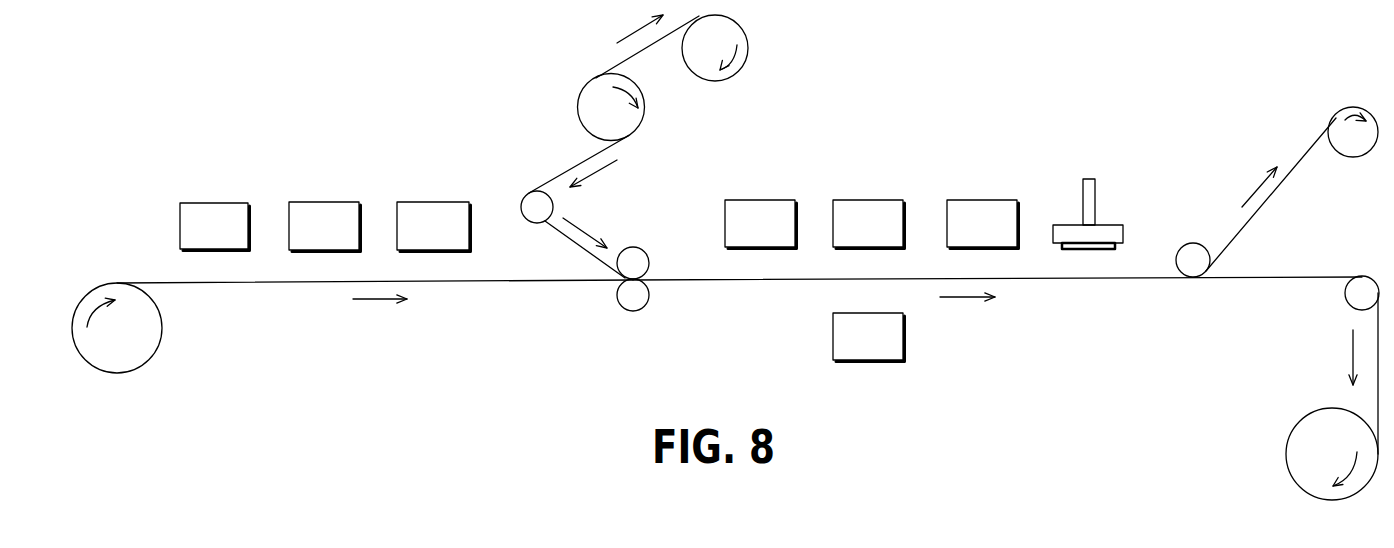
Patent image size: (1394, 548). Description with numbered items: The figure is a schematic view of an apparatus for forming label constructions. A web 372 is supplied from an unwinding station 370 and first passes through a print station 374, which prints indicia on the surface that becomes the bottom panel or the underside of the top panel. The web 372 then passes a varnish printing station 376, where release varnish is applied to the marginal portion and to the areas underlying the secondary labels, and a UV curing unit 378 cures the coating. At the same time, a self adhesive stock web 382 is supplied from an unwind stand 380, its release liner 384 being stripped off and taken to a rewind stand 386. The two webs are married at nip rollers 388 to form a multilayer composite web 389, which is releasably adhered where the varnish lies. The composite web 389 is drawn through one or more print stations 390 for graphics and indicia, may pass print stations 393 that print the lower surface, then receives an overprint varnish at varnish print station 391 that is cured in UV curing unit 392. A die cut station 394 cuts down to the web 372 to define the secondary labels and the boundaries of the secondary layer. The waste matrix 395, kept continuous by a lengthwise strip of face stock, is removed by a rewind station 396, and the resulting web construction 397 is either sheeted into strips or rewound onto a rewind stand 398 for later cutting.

The unwinding station 370 is at (135, 370).
The web 372 is at (143, 280).
The print station 374 is at (195, 237).
The varnish printing station 376 is at (305, 237).
The UV curing unit 378 is at (414, 237).
The unwind stand 380 is at (588, 110).
The self adhesive stock web 382 is at (560, 175).
The release liner 384 is at (622, 60).
The rewind stand 386 is at (748, 60).
The nip rollers 388 is at (647, 307).
The multilayer composite web 389 is at (706, 278).
The print station 390 is at (741, 234).
The varnish print station 391 is at (849, 234).
The UV curing unit 392 is at (963, 234).
The print station 393 is at (849, 348).
The die cut station 394 is at (1117, 223).
The waste matrix 395 is at (1270, 200).
The rewind station 396 is at (1335, 112).
The web construction 397 is at (1185, 277).
The rewind stand 398 is at (1307, 423).